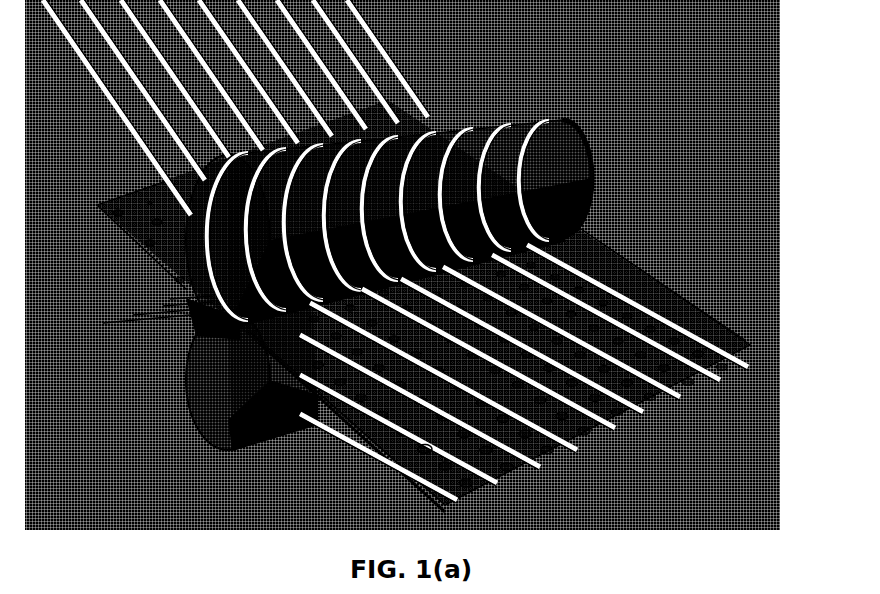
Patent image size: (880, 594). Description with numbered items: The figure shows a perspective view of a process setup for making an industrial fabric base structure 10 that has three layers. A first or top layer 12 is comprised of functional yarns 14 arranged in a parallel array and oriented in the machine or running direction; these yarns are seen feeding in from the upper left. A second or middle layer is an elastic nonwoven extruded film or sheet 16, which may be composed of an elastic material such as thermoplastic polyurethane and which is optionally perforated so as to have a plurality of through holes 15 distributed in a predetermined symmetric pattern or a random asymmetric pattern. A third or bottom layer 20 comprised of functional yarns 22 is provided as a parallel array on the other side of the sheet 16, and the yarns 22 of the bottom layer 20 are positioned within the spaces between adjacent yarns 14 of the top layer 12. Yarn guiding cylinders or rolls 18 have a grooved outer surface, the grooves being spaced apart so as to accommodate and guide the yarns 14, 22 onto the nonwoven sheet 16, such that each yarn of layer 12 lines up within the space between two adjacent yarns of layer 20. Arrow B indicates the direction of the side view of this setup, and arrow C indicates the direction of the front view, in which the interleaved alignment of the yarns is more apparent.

The industrial fabric base structure 10 is at (660, 248).
The top layer 12 is at (437, 47).
The functional yarns 14 is at (153, 127).
The through holes 15 is at (412, 451).
The elastic nonwoven extruded film or sheet 16 is at (702, 300).
The yarn guiding cylinders or rolls 18 is at (569, 128).
The bottom layer 20 is at (156, 329).
The functional yarns 22 is at (592, 440).
The arrow B is at (588, 194).
The arrow C is at (695, 402).